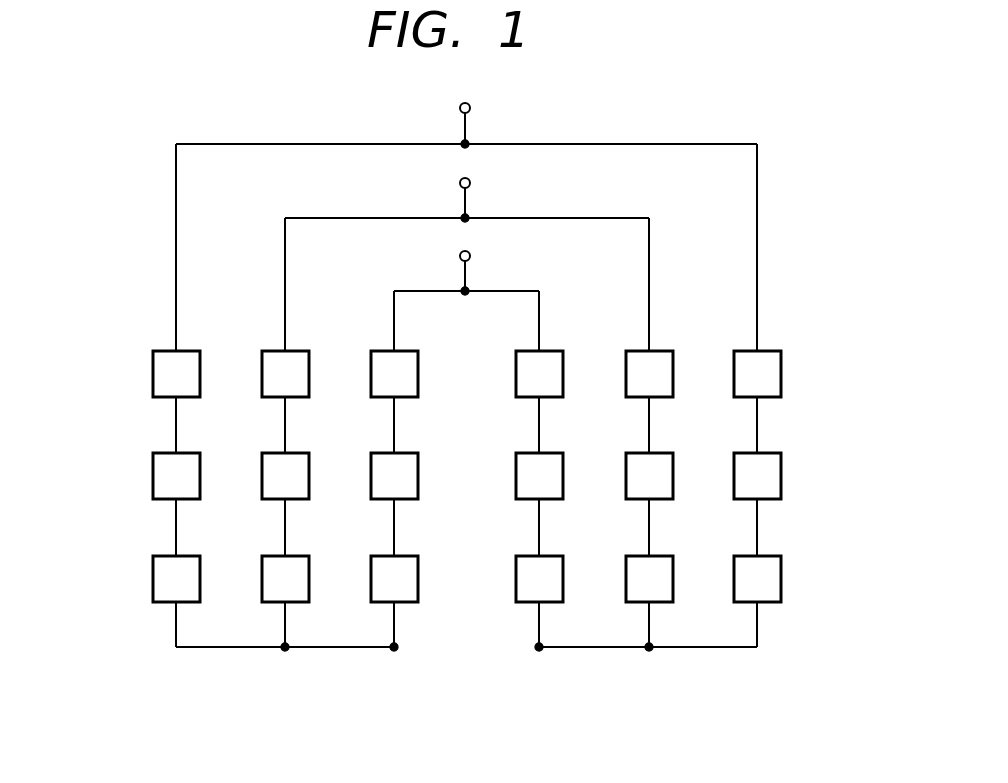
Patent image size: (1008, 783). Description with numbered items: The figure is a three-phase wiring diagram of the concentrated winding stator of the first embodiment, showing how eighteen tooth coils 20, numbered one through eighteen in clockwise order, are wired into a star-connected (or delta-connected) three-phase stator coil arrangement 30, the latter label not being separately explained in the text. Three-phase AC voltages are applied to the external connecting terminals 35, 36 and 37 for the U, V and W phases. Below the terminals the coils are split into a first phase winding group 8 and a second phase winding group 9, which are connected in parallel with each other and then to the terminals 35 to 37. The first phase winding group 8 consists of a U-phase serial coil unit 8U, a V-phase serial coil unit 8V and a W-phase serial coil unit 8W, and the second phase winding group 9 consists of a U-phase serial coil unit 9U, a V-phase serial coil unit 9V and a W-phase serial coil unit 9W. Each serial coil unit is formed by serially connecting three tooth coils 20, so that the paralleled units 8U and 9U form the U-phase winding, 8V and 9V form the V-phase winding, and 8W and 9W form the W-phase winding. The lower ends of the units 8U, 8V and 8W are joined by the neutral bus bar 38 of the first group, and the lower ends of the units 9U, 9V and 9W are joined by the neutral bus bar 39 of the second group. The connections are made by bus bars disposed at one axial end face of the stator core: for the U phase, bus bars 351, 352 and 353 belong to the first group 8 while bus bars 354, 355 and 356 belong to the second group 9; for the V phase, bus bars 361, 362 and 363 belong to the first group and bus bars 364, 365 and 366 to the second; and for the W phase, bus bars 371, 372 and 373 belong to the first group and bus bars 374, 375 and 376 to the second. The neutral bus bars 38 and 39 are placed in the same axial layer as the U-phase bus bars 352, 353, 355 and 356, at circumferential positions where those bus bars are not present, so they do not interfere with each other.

The first phase winding group 8 is at (135, 332).
The second phase winding group 9 is at (772, 283).
The tooth coil 20 is at (188, 351).
The stator winding 30 is at (808, 342).
The external connecting terminal 35 is at (465, 144).
The external connecting terminal 36 is at (465, 218).
The external connecting terminal 37 is at (465, 291).
The neutral bus bar 38 is at (328, 648).
The neutral bus bar 39 is at (683, 648).
The U-phase serial coil unit 8U is at (166, 612).
The V-phase serial coil unit 8V is at (277, 610).
The W-phase serial coil unit 8W is at (403, 612).
The U-phase serial coil unit 9U is at (768, 628).
The V-phase serial coil unit 9V is at (670, 618).
The W-phase serial coil unit 9W is at (522, 620).
The bus bar 351 is at (176, 240).
The bus bar 352 is at (176, 415).
The bus bar 353 is at (176, 517).
The bus bar 354 is at (757, 202).
The bus bar 355 is at (757, 410).
The bus bar 356 is at (757, 513).
The bus bar 361 is at (330, 222).
The bus bar 362 is at (285, 415).
The bus bar 363 is at (285, 517).
The bus bar 364 is at (649, 290).
The bus bar 365 is at (649, 410).
The bus bar 366 is at (649, 513).
The bus bar 371 is at (394, 320).
The bus bar 372 is at (394, 415).
The bus bar 373 is at (394, 517).
The bus bar 374 is at (539, 317).
The bus bar 375 is at (539, 410).
The bus bar 376 is at (539, 513).